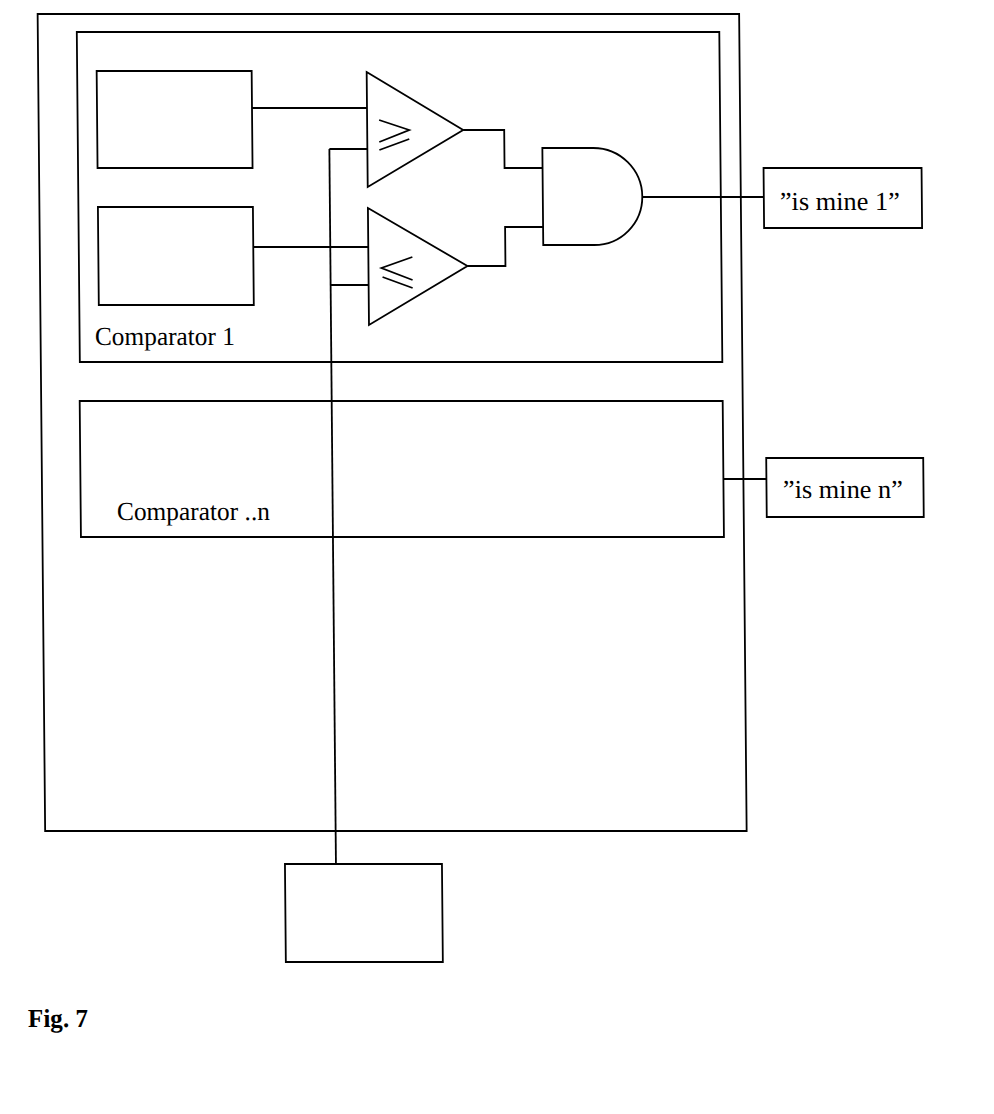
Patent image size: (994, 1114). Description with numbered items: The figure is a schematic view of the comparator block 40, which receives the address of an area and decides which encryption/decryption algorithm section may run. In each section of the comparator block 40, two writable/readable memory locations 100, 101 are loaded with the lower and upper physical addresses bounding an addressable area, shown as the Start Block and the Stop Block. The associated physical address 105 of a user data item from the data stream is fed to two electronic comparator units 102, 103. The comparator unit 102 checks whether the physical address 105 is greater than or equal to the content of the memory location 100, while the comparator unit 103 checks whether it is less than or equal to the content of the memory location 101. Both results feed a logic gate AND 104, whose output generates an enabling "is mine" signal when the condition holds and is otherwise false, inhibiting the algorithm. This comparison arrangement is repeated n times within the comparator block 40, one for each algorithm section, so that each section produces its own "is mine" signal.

The comparator block 40 is at (383, 444).
The memory location 100 is at (175, 119).
The memory location 101 is at (176, 256).
The comparator unit 102 is at (455, 129).
The comparator unit 103 is at (456, 271).
The logic gate AND 104 is at (653, 220).
The associated physical address 105 is at (364, 913).